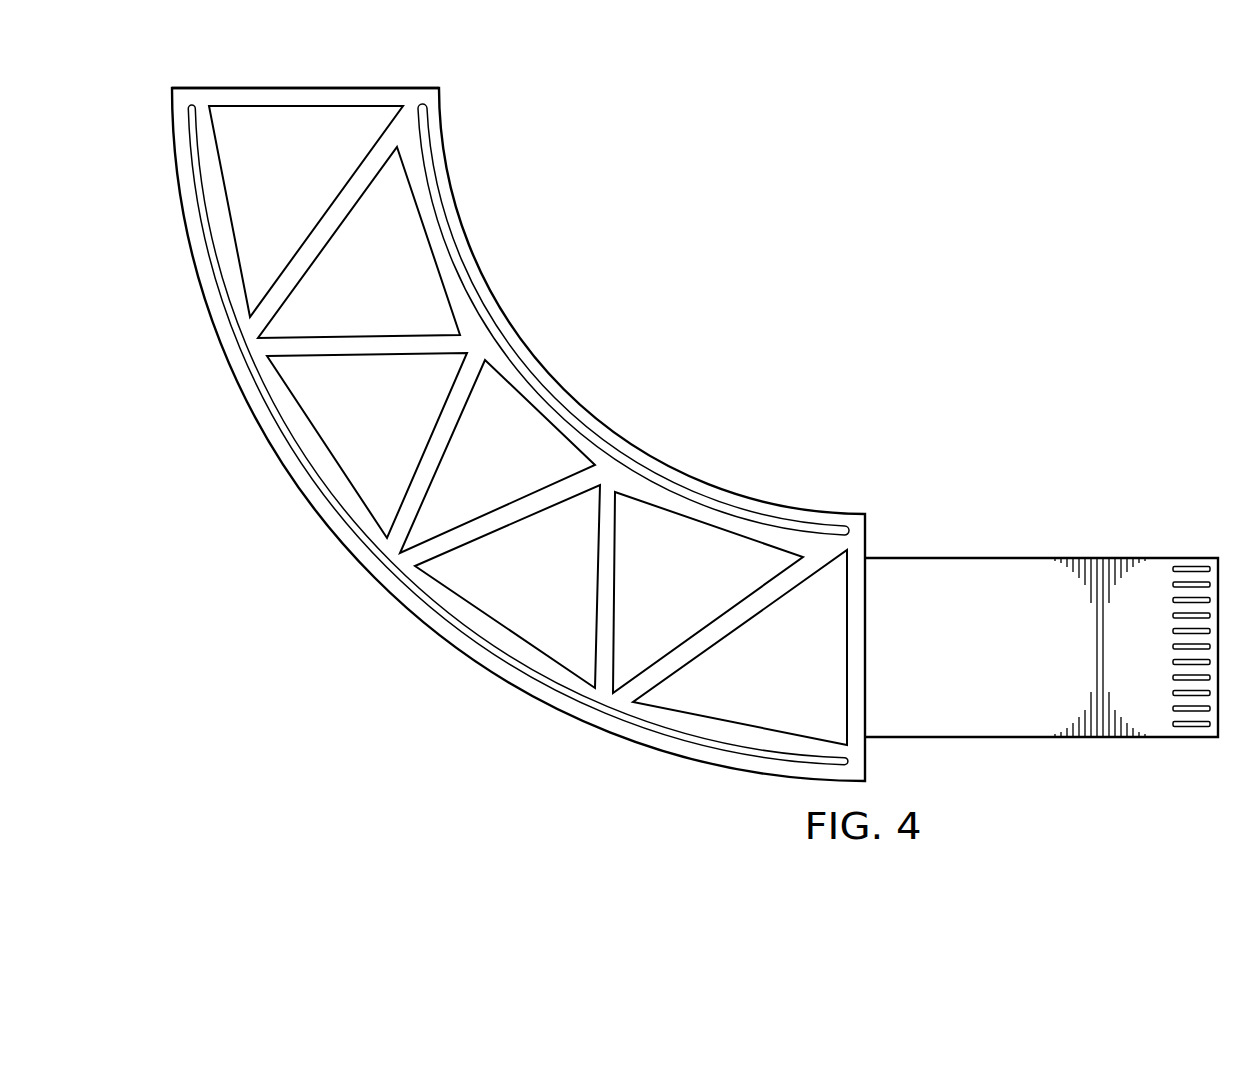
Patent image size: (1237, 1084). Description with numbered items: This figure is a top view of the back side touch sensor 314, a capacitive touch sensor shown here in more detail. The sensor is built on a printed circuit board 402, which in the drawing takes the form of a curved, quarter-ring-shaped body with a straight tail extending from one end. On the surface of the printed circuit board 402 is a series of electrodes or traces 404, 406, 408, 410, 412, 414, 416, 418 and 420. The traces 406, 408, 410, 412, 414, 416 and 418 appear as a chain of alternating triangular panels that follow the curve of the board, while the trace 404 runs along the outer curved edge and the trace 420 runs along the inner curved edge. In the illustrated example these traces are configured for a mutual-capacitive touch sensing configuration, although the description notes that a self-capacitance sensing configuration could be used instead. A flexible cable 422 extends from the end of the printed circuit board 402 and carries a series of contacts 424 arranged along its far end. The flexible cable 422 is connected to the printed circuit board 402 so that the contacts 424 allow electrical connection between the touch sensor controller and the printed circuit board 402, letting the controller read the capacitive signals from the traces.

The back side touch sensor 314 is at (880, 172).
The printed circuit board 402 is at (305, 87).
The electrode or trace 404 is at (428, 610).
The electrode or trace 406 is at (266, 190).
The electrode or trace 408 is at (351, 288).
The electrode or trace 410 is at (351, 430).
The electrode or trace 412 is at (471, 473).
The electrode or trace 414 is at (515, 593).
The electrode or trace 416 is at (657, 593).
The electrode or trace 418 is at (754, 678).
The electrode or trace 420 is at (453, 238).
The flexible cable 422 is at (990, 727).
The contacts 424 is at (1190, 729).